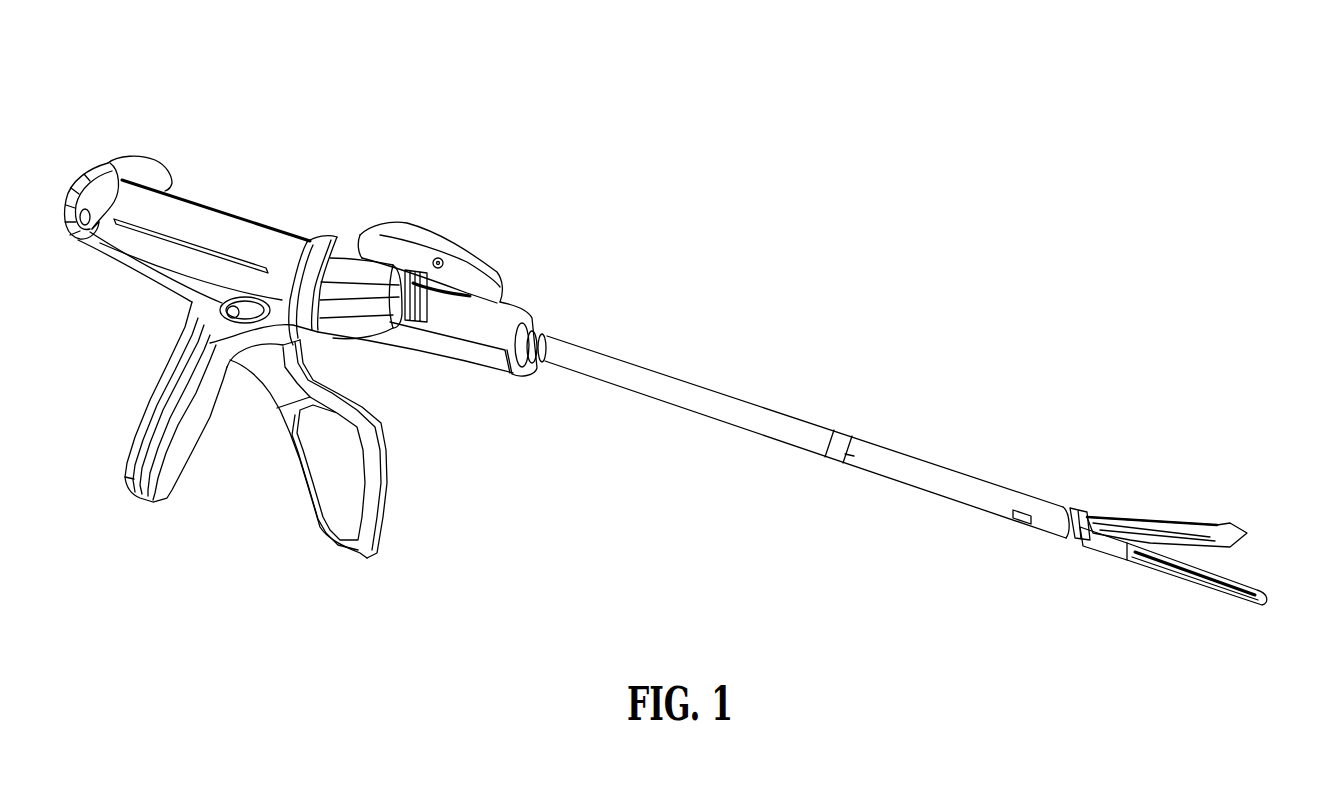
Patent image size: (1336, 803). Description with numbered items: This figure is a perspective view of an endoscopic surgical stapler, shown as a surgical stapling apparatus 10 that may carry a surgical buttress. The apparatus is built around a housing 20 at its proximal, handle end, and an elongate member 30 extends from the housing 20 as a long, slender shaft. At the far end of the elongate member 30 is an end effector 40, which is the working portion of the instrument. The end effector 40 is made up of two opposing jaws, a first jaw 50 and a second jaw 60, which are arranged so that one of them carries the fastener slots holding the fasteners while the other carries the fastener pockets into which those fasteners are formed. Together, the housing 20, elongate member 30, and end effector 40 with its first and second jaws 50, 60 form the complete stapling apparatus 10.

The surgical stapling apparatus 10 is at (760, 531).
The housing 20 is at (76, 186).
The elongate member 30 is at (637, 397).
The end effector 40 is at (1186, 632).
The first jaw 50 is at (1247, 533).
The second jaw 60 is at (1270, 597).